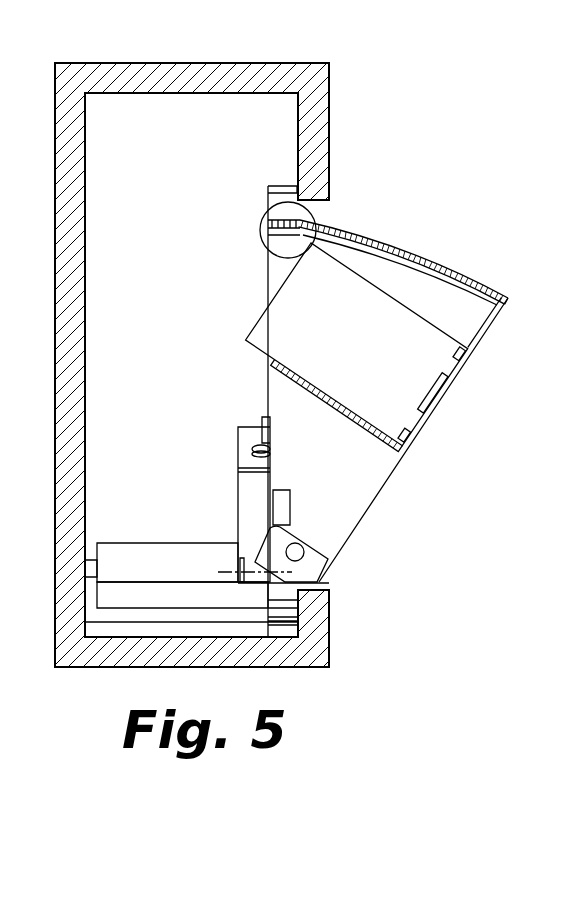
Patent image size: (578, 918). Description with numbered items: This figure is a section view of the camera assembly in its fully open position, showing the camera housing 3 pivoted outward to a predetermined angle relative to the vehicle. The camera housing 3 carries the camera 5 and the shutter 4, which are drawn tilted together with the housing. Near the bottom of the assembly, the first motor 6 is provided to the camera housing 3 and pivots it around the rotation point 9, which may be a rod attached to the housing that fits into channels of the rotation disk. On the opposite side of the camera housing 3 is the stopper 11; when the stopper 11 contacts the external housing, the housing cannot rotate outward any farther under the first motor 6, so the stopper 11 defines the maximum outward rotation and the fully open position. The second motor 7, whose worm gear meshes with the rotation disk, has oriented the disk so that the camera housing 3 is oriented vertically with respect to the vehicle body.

The camera housing 3 is at (330, 512).
The shutter 4 is at (437, 399).
The camera 5 is at (429, 347).
The first motor 6 is at (112, 570).
The second motor 7 is at (244, 457).
The rotation point 9 is at (303, 553).
The stopper 11 is at (262, 230).